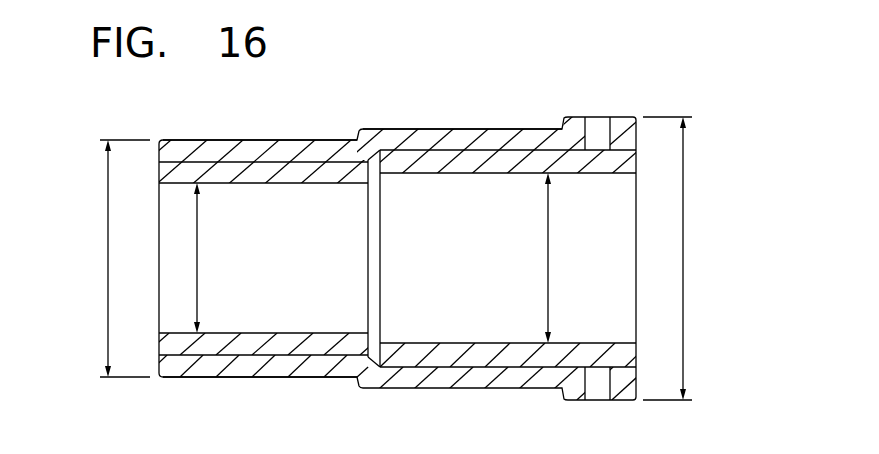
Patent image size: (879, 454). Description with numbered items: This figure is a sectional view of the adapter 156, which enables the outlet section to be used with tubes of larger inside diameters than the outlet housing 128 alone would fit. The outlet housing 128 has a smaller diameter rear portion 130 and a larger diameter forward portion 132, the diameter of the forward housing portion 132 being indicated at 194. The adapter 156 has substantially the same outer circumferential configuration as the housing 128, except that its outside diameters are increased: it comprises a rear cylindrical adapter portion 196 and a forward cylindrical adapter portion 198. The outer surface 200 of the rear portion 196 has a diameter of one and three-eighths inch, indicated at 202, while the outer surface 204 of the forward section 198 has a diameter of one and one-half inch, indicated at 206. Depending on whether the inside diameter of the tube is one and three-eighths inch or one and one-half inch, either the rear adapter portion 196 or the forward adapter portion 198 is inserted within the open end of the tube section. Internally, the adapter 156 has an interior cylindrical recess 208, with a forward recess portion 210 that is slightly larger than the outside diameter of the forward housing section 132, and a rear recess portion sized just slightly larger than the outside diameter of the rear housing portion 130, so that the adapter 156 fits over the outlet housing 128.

The outlet housing 128 is at (422, 378).
The rear portion 130 is at (293, 346).
The forward portion 132 is at (507, 357).
The adapter 156 is at (414, 116).
The diameter of the forward housing portion 194 is at (548, 260).
The rear cylindrical adapter portion 196 is at (292, 150).
The forward cylindrical adapter portion 198 is at (503, 142).
The outer surface 200 is at (227, 140).
The diameter of the outer surface of the rear portion 202 is at (108, 238).
The outer surface 204 is at (458, 130).
The diameter of the outer surface of the forward section 206 is at (683, 250).
The interior cylindrical recess 208 is at (263, 335).
The forward recess portion 210 is at (473, 343).